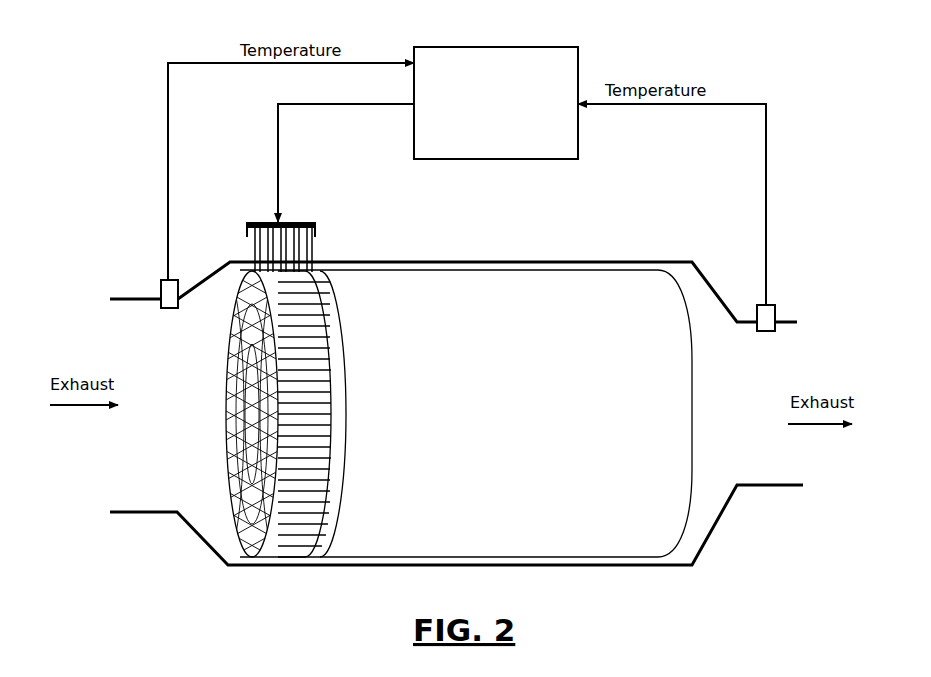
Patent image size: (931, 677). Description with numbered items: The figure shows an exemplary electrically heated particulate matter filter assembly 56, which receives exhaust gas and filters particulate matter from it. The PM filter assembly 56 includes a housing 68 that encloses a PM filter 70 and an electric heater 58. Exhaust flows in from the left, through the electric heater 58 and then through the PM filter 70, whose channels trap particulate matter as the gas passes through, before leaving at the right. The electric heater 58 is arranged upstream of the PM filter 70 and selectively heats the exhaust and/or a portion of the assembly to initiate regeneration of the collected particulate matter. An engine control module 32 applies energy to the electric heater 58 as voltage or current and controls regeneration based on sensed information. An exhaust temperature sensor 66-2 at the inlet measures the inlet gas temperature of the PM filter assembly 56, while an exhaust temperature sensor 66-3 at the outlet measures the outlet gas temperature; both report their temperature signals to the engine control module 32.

The engine control module 32 is at (497, 47).
The particulate matter filter assembly 56 is at (113, 192).
The electric heater 58 is at (226, 414).
The exhaust temperature sensor 66-2 is at (165, 278).
The exhaust temperature sensor 66-3 is at (770, 305).
The housing 68 is at (524, 262).
The particulate matter filter 70 is at (693, 412).